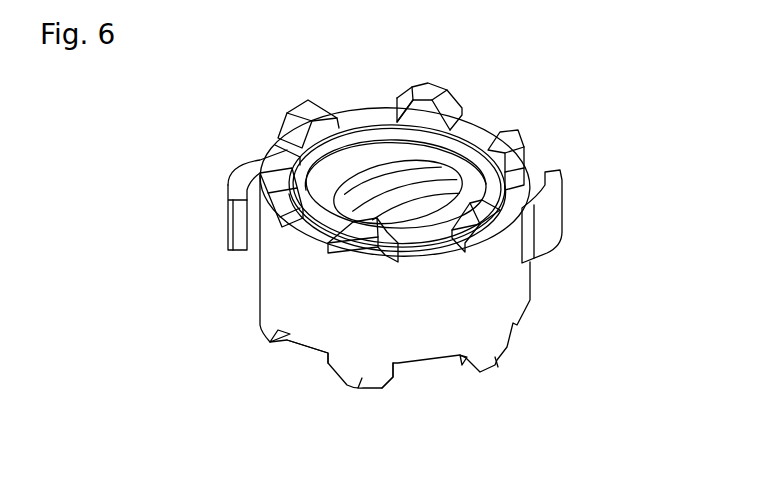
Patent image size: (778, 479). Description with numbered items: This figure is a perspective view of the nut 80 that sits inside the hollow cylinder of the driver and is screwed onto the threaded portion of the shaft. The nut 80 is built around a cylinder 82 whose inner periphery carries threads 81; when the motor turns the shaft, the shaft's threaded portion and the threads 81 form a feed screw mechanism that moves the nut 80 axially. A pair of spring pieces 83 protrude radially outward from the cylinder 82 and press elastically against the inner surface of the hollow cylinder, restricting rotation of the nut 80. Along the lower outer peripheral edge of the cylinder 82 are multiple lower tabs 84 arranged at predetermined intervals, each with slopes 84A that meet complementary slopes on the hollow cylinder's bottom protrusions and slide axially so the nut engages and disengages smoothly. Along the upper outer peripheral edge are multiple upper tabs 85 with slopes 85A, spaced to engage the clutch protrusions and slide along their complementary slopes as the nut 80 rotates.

The nut 80 is at (592, 52).
The threads 81 is at (408, 165).
The cylinder 82 is at (520, 290).
The spring pieces 83 is at (558, 215).
The lower tabs 84 is at (265, 330).
The slopes 84A is at (328, 377).
The upper tabs 85 is at (428, 83).
The slopes 85A is at (393, 97).